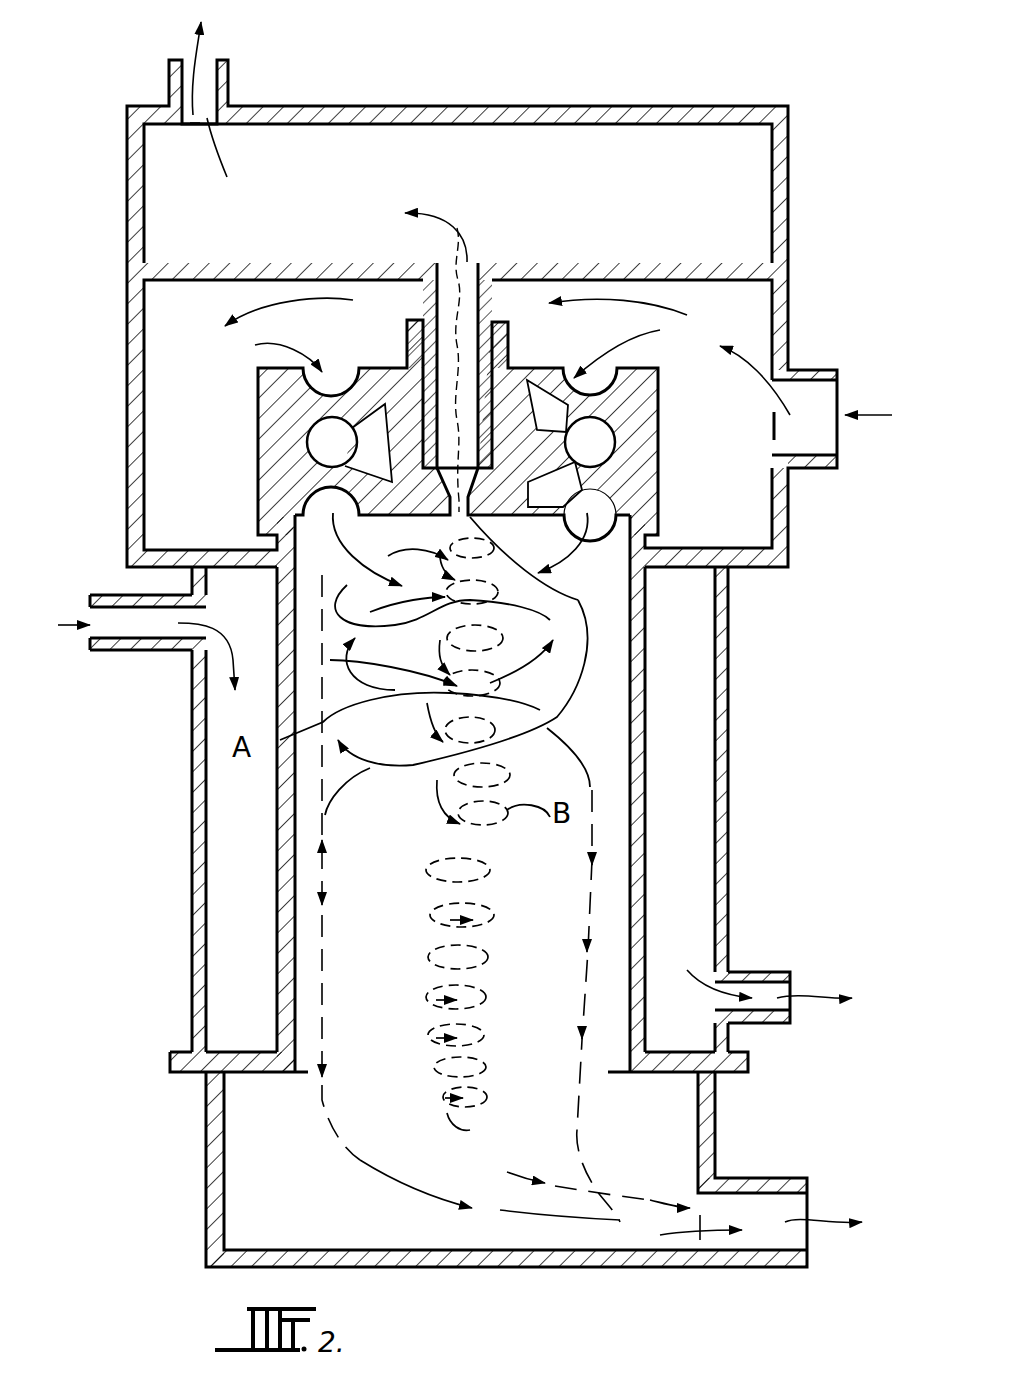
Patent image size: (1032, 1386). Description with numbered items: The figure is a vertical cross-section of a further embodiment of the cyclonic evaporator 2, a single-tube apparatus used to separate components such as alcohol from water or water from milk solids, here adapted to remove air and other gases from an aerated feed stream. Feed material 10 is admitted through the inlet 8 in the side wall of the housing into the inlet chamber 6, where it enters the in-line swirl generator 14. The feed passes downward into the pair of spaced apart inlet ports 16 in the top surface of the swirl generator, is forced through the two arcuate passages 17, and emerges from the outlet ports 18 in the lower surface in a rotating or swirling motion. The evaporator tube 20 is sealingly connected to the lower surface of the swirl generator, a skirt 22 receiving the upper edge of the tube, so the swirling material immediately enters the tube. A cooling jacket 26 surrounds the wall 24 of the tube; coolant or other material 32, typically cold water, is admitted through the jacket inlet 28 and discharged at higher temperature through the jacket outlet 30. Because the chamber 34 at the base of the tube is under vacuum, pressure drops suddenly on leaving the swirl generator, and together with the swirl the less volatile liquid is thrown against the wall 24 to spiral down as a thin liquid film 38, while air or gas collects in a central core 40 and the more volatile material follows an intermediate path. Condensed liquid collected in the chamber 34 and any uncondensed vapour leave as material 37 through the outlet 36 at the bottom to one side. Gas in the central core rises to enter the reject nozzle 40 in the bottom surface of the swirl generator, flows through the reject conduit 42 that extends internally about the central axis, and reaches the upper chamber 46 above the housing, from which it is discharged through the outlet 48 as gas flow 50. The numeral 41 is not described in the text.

The cyclonic evaporator 2 is at (191, 809).
The inlet chamber 6 is at (190, 352).
The inlet 8 is at (806, 370).
The feed material 10 is at (876, 415).
The in-line swirl generator 14 is at (238, 427).
The inlet ports 16 is at (316, 368).
The arcuate passages 17 is at (330, 440).
The outlet ports 18 is at (320, 483).
The evaporator tube 20 is at (649, 756).
The skirt 22 is at (647, 523).
The wall of the evaporator tube 24 is at (647, 675).
The cooling jacket 26 is at (222, 920).
The jacket inlet 28 is at (150, 650).
The jacket outlet 30 is at (760, 972).
The coolant or other material 32 is at (60, 625).
The chamber 34 is at (307, 1150).
The outlet 36 is at (757, 1180).
The discharged material 37 is at (828, 1222).
The thin liquid film 38 is at (297, 975).
The reject nozzle 40 is at (488, 1108).
The jet stream 41 is at (573, 585).
The reject conduit 42 is at (510, 322).
The upper chamber 46 is at (437, 160).
The outlet 48 is at (172, 80).
The gas flow 50 is at (190, 52).